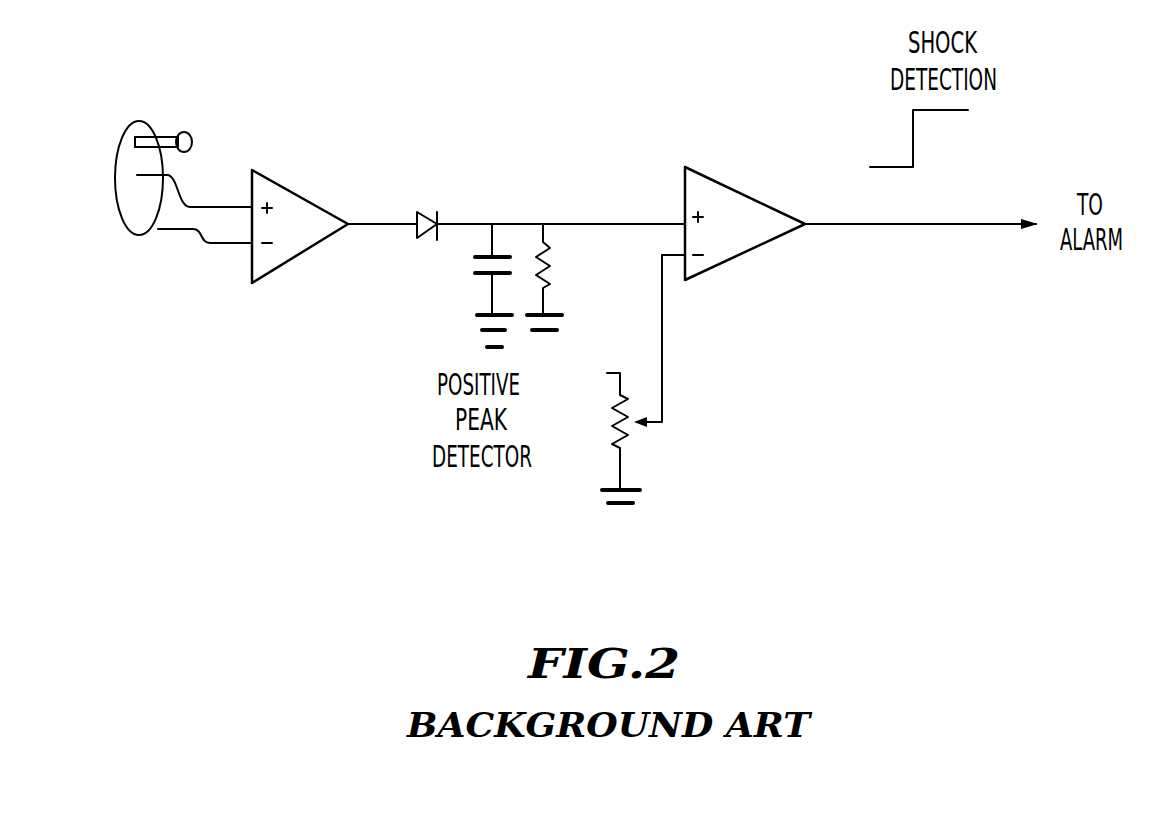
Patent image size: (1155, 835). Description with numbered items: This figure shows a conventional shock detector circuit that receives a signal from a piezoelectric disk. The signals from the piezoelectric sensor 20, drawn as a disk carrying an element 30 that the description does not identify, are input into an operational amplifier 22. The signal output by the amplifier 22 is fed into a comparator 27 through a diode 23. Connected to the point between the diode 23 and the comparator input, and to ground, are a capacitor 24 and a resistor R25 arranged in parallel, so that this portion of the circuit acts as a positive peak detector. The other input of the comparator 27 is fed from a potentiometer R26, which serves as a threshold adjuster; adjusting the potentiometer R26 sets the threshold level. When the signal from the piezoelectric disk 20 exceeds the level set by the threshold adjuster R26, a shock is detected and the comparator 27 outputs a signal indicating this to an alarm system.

The piezoelectric sensor 20 is at (113, 179).
The sensor knob / mass 30 is at (182, 131).
The operational amplifier 22 is at (307, 198).
The diode 23 is at (438, 216).
The capacitor 24 is at (470, 267).
The resistor R25 is at (550, 283).
The comparator 27 is at (733, 183).
The potentiometer R26 is at (613, 421).